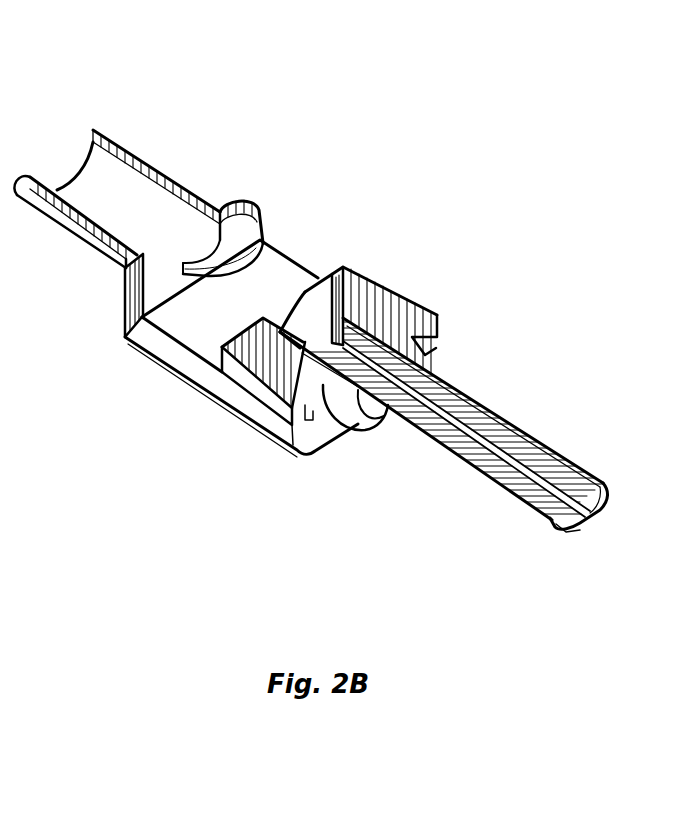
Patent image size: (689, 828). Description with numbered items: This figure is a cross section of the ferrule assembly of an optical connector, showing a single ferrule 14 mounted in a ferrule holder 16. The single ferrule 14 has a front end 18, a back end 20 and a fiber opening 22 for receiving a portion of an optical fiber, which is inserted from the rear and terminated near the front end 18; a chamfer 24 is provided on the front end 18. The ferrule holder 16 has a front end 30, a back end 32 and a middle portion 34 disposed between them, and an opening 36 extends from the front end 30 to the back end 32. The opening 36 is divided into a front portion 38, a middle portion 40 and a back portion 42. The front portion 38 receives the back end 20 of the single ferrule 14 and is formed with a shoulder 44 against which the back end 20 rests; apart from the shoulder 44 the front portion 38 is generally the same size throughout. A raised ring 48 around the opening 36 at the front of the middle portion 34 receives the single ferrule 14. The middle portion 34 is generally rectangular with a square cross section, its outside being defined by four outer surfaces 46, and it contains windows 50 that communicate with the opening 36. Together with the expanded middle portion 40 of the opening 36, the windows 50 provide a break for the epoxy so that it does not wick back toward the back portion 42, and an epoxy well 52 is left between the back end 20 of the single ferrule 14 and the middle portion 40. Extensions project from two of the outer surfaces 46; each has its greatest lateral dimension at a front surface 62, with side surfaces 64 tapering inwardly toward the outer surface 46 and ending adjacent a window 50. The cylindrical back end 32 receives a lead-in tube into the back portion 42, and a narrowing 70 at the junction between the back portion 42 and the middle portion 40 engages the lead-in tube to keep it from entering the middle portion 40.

The single ferrule 14 is at (478, 458).
The ferrule holder 16 is at (302, 456).
The front end 18 is at (606, 517).
The back end 20 is at (336, 340).
The fiber opening 22 is at (556, 476).
The chamfer 24 is at (565, 533).
The front end 30 is at (377, 432).
The back end 32 is at (138, 249).
The middle portion 34 is at (307, 362).
The opening 36 is at (163, 209).
The front portion 38 is at (324, 332).
The middle portion 40 is at (247, 303).
The back portion 42 is at (147, 223).
The shoulder 44 is at (350, 318).
The outer surfaces 46 is at (230, 392).
The raised ring 48 is at (428, 355).
The windows 50 is at (126, 340).
The epoxy well 52 is at (297, 320).
The front surface 62 is at (307, 414).
The side surfaces 64 is at (258, 383).
The narrowing 70 is at (203, 243).